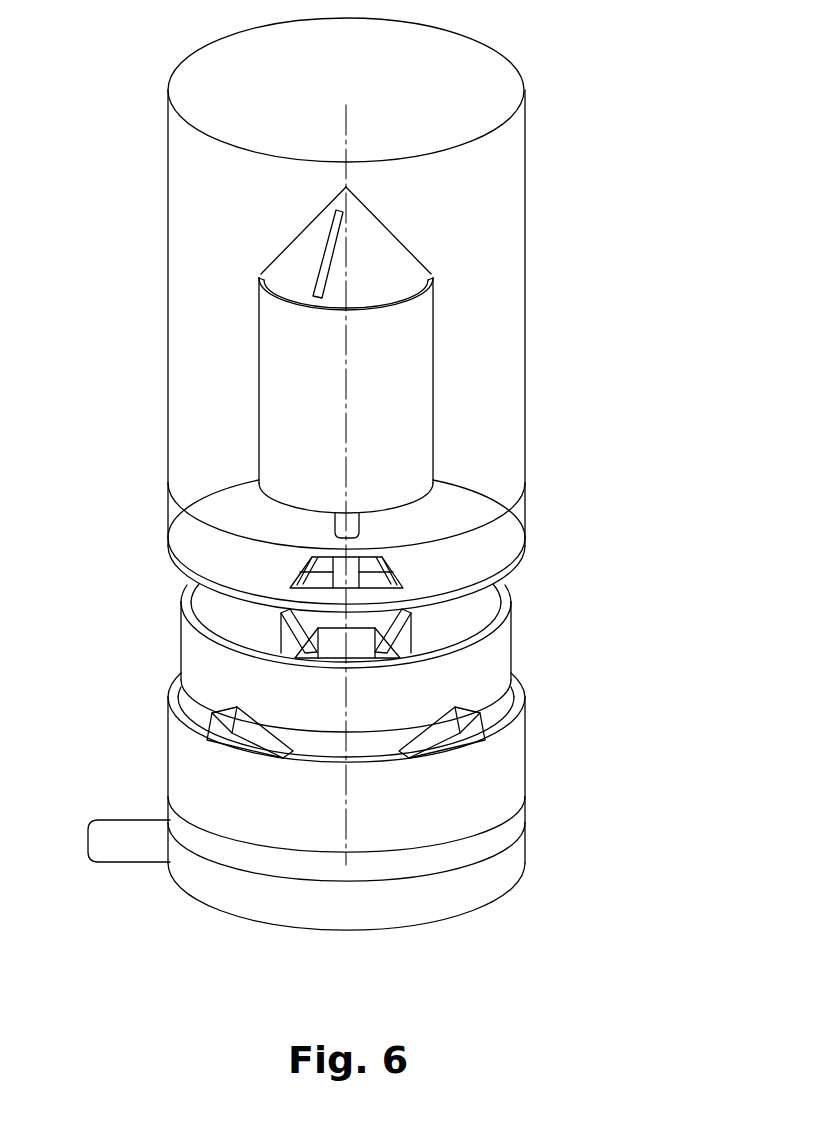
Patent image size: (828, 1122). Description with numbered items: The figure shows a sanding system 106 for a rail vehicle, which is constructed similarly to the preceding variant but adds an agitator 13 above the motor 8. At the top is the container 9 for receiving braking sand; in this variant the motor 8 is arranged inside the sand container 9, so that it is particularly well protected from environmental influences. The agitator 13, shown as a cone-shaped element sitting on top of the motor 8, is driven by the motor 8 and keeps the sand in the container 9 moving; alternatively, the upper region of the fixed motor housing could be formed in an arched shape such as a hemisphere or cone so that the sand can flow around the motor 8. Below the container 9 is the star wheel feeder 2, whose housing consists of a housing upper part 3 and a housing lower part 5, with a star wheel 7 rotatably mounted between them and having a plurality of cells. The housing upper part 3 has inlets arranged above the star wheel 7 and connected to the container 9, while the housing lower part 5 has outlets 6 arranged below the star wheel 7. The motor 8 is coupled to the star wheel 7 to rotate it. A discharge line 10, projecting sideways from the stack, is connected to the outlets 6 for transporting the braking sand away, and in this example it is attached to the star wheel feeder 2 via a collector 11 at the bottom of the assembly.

The sanding system 106 is at (606, 132).
The agitator 13 is at (387, 260).
The container 9 is at (508, 327).
The motor 8 is at (417, 443).
The star wheel feeder 2 is at (80, 483).
The housing upper part 3 is at (193, 540).
The star wheel 7 is at (497, 666).
The outlets 6 is at (205, 725).
The housing lower part 5 is at (185, 777).
The collector 11 is at (497, 881).
The discharge line 10 is at (130, 850).